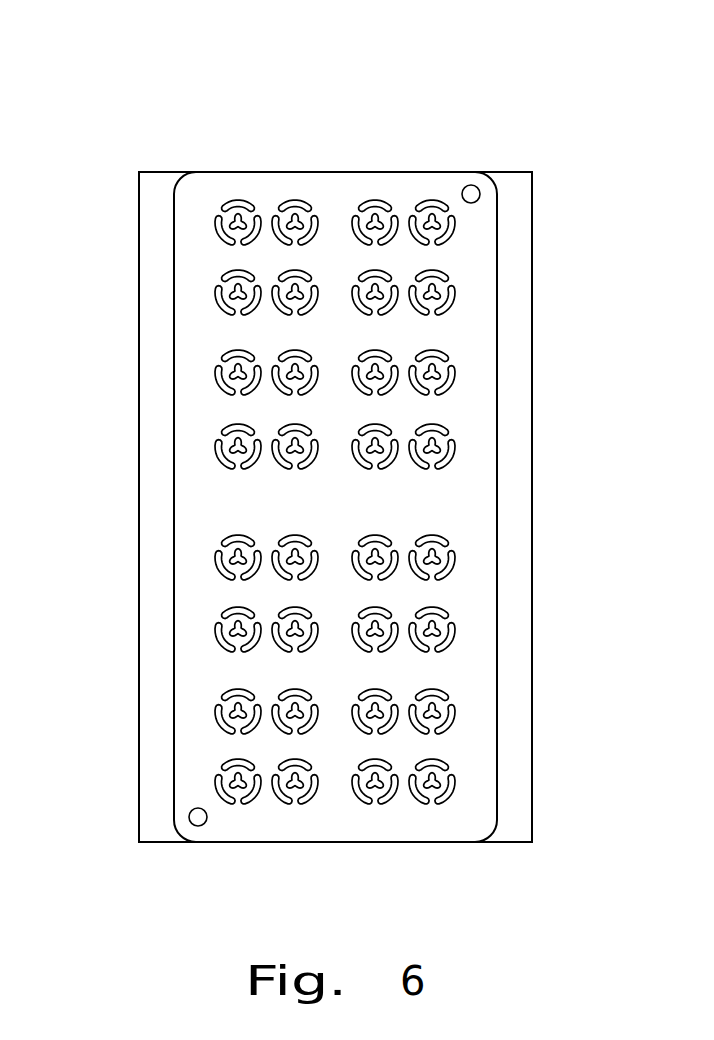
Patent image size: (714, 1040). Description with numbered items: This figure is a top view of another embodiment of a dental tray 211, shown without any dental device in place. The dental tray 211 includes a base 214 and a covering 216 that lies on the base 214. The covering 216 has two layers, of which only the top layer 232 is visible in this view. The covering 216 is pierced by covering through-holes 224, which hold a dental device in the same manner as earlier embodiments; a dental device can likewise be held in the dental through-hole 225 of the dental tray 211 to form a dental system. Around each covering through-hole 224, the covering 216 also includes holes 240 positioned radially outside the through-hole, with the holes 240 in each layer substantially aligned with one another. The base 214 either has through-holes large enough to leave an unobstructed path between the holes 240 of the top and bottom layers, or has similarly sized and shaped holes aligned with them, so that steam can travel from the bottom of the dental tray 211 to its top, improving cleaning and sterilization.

The dental tray 211 is at (124, 133).
The base 214 is at (528, 209).
The covering 216 is at (201, 195).
The top layer 232 is at (338, 197).
The covering through-holes 224 is at (437, 292).
The dental through-hole 225 is at (437, 558).
The holes 240 is at (414, 388).